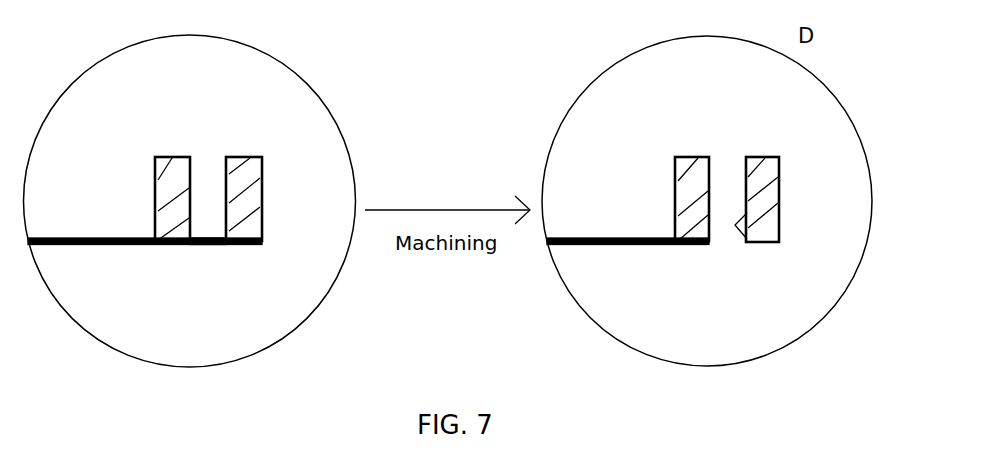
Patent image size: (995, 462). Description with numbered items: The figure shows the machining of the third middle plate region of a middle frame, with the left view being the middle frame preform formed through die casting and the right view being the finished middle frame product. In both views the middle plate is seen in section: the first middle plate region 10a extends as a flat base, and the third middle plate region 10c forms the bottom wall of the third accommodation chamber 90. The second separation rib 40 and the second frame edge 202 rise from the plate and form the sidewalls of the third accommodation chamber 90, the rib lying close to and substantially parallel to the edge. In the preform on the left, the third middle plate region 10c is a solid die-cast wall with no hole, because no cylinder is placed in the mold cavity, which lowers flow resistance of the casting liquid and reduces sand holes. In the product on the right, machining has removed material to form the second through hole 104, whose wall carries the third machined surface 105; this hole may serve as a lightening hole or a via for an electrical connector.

The first middle plate region 10a is at (53, 238).
The third middle plate region 10c is at (202, 243).
The second separation rib 40 is at (172, 158).
The third accommodation chamber 90 is at (200, 181).
The second frame edge 202 is at (240, 158).
The second through hole 104 is at (730, 240).
The third machined surface 105 is at (745, 228).